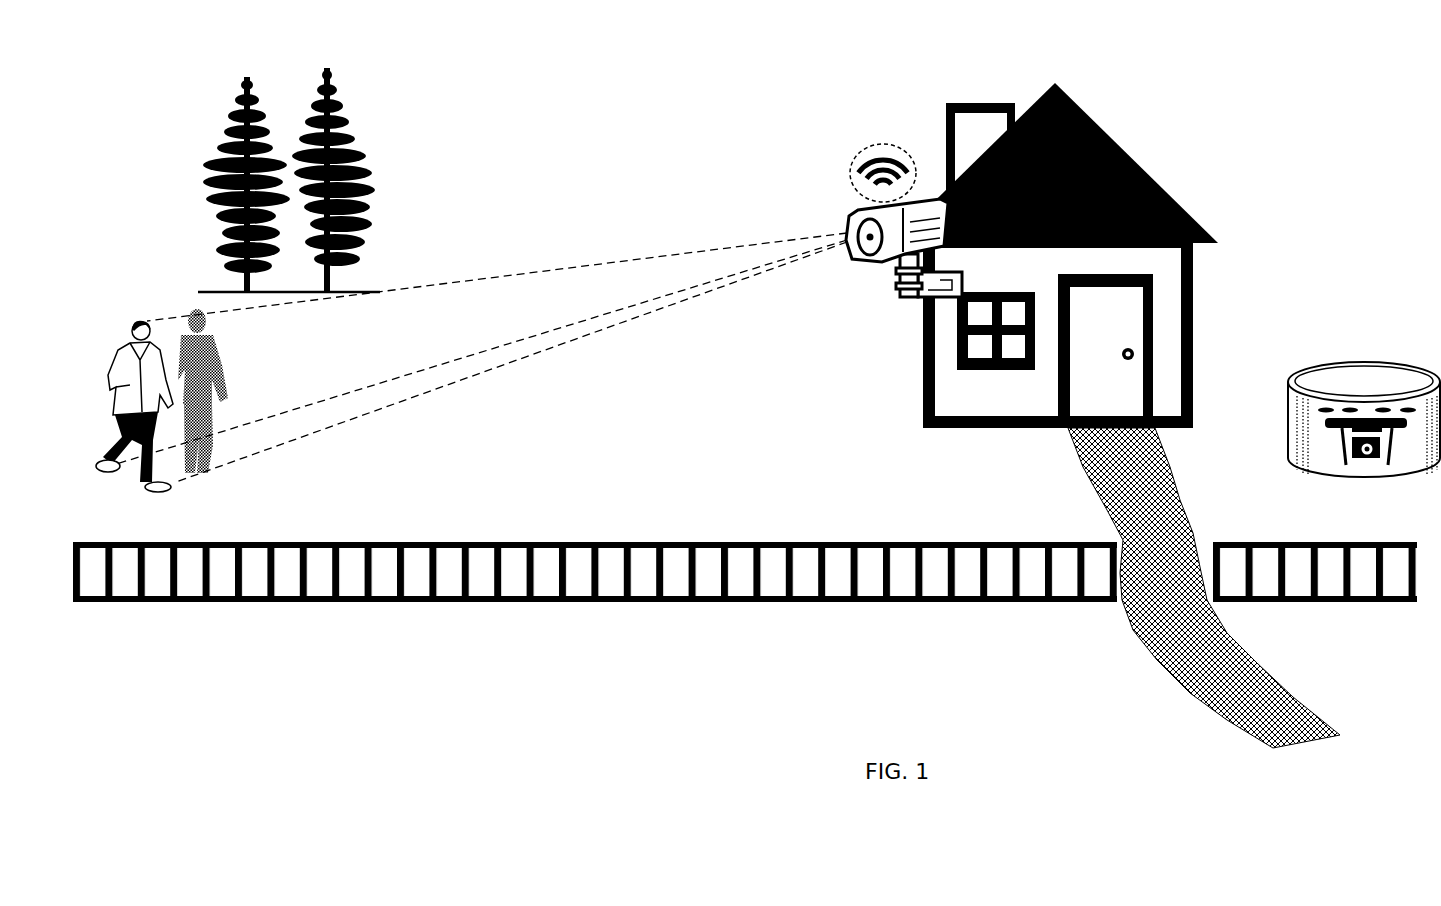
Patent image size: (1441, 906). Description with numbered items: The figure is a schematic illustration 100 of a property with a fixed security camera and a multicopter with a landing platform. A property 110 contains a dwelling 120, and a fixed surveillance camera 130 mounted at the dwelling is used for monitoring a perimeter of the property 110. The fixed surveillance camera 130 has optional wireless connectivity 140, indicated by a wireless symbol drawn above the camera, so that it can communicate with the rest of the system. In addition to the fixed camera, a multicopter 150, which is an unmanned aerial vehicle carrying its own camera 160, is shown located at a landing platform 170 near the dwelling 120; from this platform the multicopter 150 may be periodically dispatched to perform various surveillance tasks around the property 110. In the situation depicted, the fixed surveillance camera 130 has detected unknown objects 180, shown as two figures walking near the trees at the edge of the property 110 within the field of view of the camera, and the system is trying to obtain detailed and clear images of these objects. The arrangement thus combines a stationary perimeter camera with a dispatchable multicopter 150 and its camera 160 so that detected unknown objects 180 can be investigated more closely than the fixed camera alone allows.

The schematic illustration 100 is at (1421, 106).
The property 110 is at (747, 389).
The dwelling 120 is at (1152, 176).
The fixed surveillance camera 130 is at (846, 216).
The wireless connectivity 140 is at (858, 155).
The multicopter 150 is at (1366, 418).
The camera 160 is at (1365, 462).
The landing platform 170 is at (1317, 370).
The unknown objects 180 is at (220, 410).